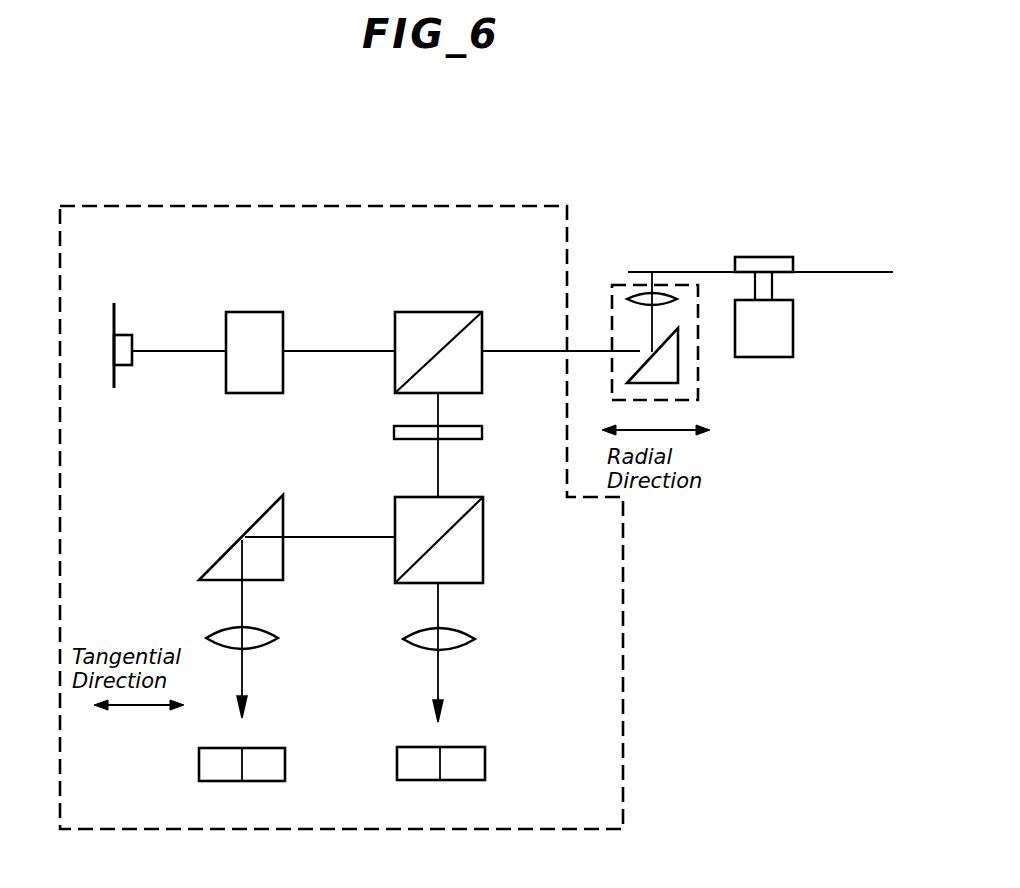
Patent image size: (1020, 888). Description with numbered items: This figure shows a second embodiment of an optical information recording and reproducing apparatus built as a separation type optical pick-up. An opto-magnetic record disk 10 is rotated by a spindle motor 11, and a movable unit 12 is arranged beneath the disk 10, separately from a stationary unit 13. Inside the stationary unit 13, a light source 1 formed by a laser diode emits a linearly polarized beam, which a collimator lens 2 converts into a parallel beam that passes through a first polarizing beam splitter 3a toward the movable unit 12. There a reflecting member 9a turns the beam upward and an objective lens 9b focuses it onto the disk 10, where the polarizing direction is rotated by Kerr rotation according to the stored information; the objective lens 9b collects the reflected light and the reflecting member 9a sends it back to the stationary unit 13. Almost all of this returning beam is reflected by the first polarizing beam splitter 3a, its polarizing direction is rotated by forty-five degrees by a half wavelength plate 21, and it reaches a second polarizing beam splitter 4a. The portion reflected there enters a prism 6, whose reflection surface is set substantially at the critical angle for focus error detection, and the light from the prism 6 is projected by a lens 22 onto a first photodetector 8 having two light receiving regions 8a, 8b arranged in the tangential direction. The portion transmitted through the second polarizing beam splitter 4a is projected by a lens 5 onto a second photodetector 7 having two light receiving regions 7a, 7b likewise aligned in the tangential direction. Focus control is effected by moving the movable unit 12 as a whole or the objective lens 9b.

The light source 1 is at (115, 315).
The collimator lens 2 is at (250, 312).
The first polarizing beam splitter 3a is at (438, 312).
The half wavelength plate 21 is at (392, 432).
The second polarizing beam splitter 4a is at (484, 542).
The prism 6 is at (257, 518).
The lens 22 is at (278, 636).
The lens 5 is at (475, 637).
The first photodetector 8 is at (287, 773).
The light receiving region 8a is at (220, 772).
The light receiving region 8b is at (268, 772).
The second photodetector 7 is at (487, 770).
The light receiving region 7a is at (420, 771).
The light receiving region 7b is at (468, 771).
The reflecting member 9a is at (679, 355).
The objective lens 9b is at (632, 296).
The optical record disk 10 is at (843, 272).
The spindle motor 11 is at (793, 325).
The movable unit 12 is at (698, 378).
The stationary unit 13 is at (623, 631).